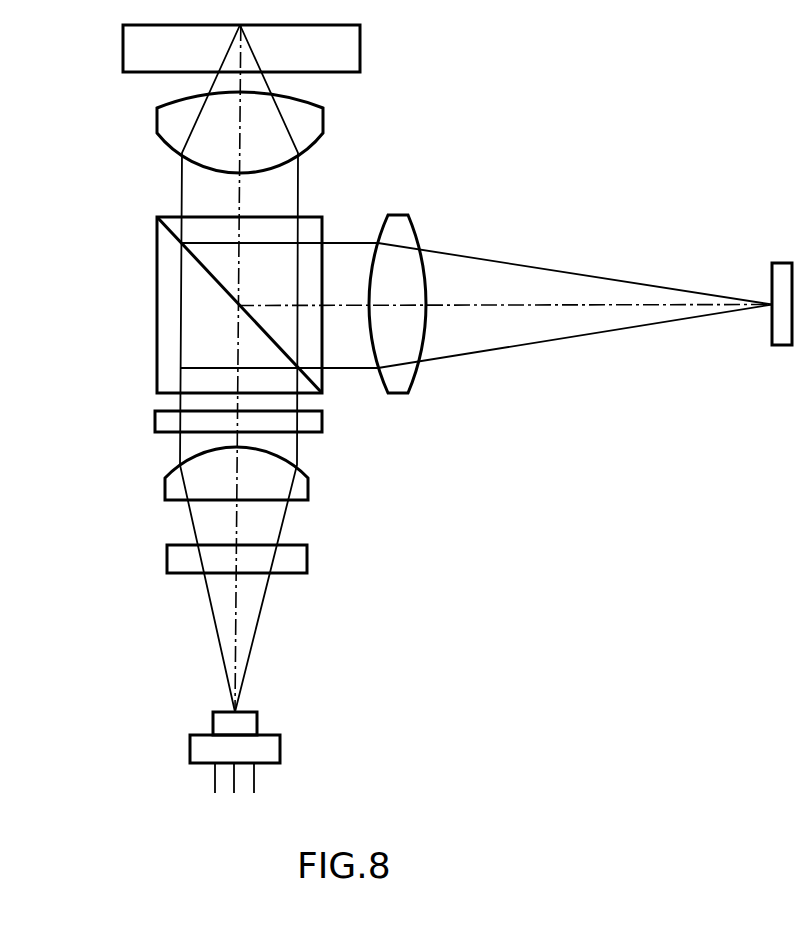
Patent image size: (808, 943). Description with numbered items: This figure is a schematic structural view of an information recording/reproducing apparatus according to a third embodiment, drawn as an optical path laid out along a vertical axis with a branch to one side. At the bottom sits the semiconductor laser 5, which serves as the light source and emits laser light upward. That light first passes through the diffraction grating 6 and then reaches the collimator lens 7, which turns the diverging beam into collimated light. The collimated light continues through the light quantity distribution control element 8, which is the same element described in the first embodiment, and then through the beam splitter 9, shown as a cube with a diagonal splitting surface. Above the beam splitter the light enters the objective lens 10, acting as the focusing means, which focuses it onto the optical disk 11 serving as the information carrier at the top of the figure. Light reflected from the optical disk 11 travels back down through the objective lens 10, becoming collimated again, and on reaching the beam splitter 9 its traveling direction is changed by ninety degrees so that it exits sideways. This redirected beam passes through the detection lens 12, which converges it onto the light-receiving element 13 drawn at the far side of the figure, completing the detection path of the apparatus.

The semiconductor laser 5 is at (196, 748).
The diffraction grating 6 is at (172, 558).
The collimator lens 7 is at (172, 490).
The light quantity distribution control element 8 is at (162, 422).
The beam splitter 9 is at (162, 290).
The objective lens 10 is at (173, 120).
The optical disk 11 is at (140, 52).
The detection lens 12 is at (404, 222).
The light-receiving element 13 is at (781, 266).